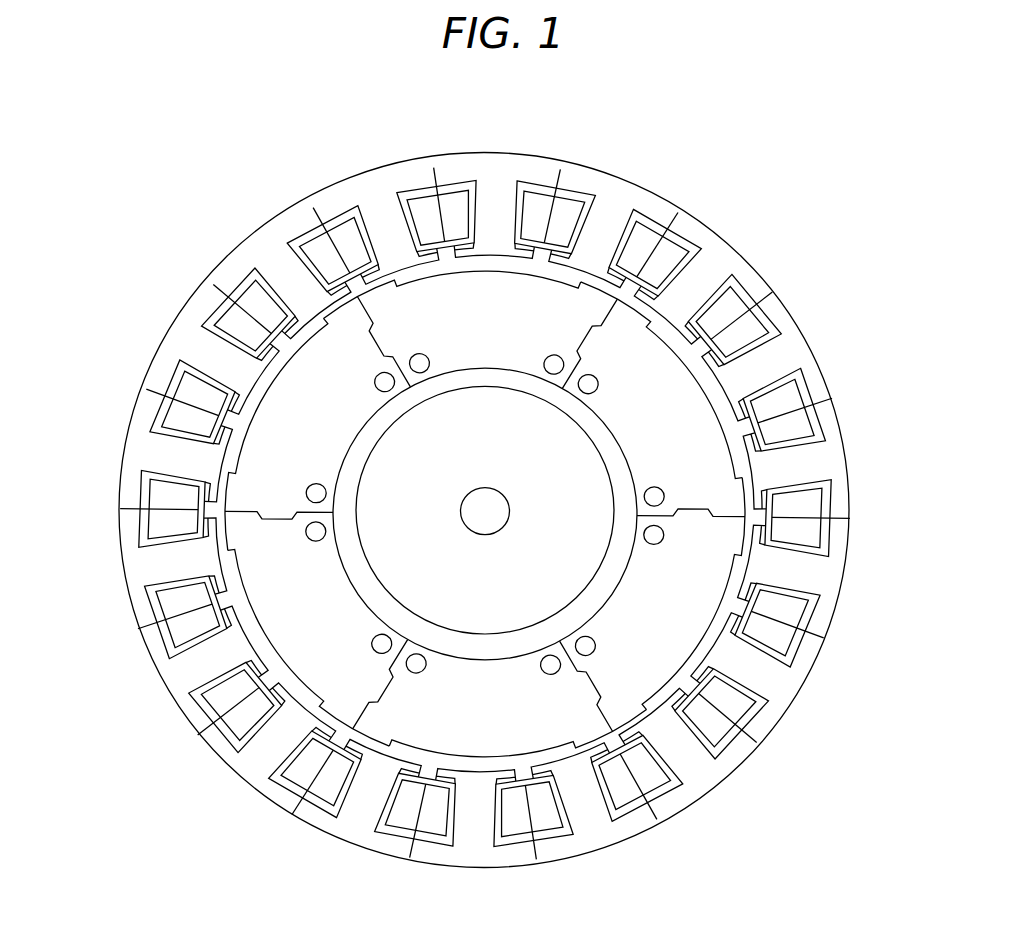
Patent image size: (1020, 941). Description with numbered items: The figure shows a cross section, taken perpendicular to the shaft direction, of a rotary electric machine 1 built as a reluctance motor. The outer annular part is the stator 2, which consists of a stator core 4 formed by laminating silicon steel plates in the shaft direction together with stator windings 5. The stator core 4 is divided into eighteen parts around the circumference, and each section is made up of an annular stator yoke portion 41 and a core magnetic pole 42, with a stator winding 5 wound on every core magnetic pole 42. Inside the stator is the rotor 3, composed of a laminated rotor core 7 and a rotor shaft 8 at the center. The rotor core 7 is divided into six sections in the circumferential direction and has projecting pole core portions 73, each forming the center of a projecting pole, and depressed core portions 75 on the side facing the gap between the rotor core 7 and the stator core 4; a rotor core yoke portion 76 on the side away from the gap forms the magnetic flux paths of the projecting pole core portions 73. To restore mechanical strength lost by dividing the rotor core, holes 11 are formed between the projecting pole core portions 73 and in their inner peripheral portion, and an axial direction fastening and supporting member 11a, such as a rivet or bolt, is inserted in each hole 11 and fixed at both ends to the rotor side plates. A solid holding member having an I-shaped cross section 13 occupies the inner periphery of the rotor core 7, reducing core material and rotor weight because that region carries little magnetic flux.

The rotary electric machine 1 is at (660, 162).
The stator 2 is at (770, 272).
The rotor 3 is at (262, 393).
The stator core 4 is at (820, 370).
The stator winding 5 is at (832, 408).
The rotor core 7 is at (650, 620).
The rotor shaft 8 is at (497, 516).
The hole 11 is at (300, 530).
The axial direction fastening and supporting member 11a is at (300, 500).
The solid holding member having an I-shaped cross section 13 is at (395, 568).
The stator yoke portion 41 is at (850, 531).
The core magnetic pole 42 is at (795, 560).
The projecting pole core portion 73 is at (630, 325).
The depressed core portion 75 is at (485, 258).
The rotor core yoke portion 76 is at (447, 318).